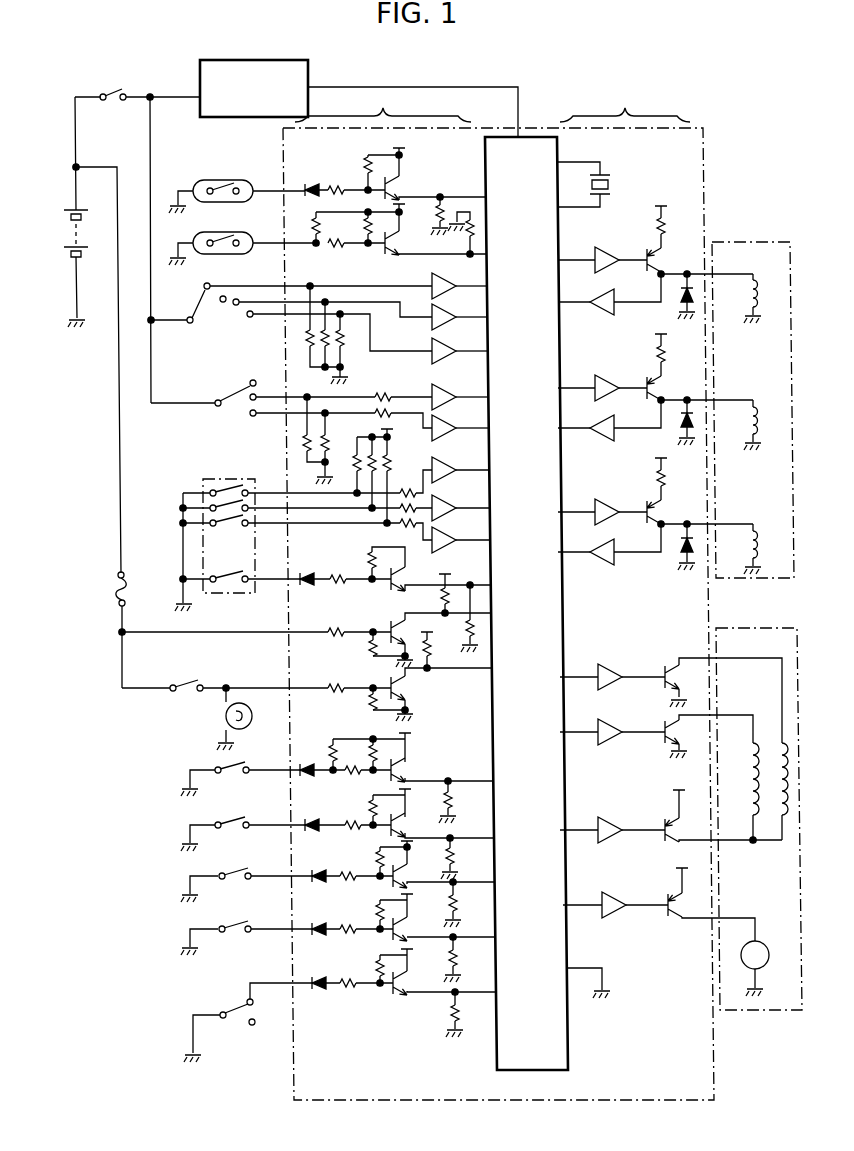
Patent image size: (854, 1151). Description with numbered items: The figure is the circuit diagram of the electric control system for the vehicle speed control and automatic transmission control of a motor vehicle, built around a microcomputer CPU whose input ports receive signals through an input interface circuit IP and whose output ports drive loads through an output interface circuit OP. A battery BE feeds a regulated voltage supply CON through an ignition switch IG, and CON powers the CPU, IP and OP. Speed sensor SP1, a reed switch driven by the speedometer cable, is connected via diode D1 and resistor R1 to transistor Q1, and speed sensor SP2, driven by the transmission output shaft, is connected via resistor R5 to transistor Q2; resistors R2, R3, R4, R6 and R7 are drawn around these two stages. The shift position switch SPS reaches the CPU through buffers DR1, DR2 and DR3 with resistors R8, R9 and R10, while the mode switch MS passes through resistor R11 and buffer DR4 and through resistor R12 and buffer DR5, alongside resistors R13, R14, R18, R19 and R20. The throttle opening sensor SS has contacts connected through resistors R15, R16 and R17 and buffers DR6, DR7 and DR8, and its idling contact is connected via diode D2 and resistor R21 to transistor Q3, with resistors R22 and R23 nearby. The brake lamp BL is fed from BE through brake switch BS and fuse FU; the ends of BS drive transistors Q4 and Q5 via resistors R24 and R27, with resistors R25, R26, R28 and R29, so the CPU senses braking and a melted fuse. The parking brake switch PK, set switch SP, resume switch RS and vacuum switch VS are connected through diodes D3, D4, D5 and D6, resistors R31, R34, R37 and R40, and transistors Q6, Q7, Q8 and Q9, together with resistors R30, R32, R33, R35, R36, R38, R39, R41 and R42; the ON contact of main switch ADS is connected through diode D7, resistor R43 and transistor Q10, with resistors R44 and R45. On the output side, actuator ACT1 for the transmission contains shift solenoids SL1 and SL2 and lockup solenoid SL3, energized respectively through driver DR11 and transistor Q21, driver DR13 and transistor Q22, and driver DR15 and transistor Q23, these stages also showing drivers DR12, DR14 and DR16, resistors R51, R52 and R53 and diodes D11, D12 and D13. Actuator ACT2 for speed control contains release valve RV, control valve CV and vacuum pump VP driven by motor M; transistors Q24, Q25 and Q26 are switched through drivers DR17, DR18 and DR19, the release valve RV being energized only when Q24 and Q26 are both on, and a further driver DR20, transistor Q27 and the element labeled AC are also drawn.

The input interface circuit IP is at (383, 109).
The output interface circuit OP is at (625, 105).
The microcomputer CPU is at (547, 603).
The regulated voltage supply CON is at (263, 60).
The ignition switch IG is at (137, 84).
The battery BE is at (65, 233).
The fuse FU is at (109, 589).
The brake switch BS is at (225, 676).
The brake lamp BL is at (247, 719).
The speed sensor SP1 is at (237, 187).
The speed sensor SP2 is at (242, 242).
The shift position switch SPS is at (202, 311).
The mode switch MS is at (208, 401).
The throttle opening sensor SS is at (230, 534).
The parking brake switch PK is at (220, 779).
The set switch SP is at (221, 834).
The resume switch RS is at (223, 885).
The vacuum switch VS is at (223, 938).
The main switch ADS is at (248, 1012).
The actuator for the automatic transmission ACT1 is at (714, 242).
The actuator for vehicle speed control ACT2 is at (718, 628).
The shift solenoid SL1 is at (764, 293).
The shift solenoid SL2 is at (764, 417).
The lockup solenoid SL3 is at (764, 541).
The release valve RV is at (736, 675).
The control valve CV is at (742, 769).
The coil AC is at (757, 791).
The vacuum pump VP is at (737, 909).
The motor M is at (755, 968).
The diode D1 is at (312, 181).
The diode D2 is at (303, 569).
The diode D3 is at (303, 761).
The diode D4 is at (308, 815).
The diode D5 is at (312, 866).
The diode D6 is at (312, 919).
The diode D7 is at (312, 973).
The diode D11 is at (678, 298).
The diode D12 is at (683, 427).
The diode D13 is at (683, 553).
The transistor Q1 is at (435, 188).
The transistor Q2 is at (436, 243).
The transistor Q3 is at (441, 577).
The transistor Q4 is at (441, 640).
The transistor Q5 is at (442, 694).
The transistor Q6 is at (442, 770).
The transistor Q7 is at (442, 825).
The transistor Q8 is at (444, 876).
The transistor Q9 is at (444, 929).
The transistor Q10 is at (445, 983).
The transistor Q21 is at (671, 260).
The transistor Q22 is at (671, 386).
The transistor Q23 is at (671, 511).
The transistor Q24 is at (688, 686).
The transistor Q25 is at (688, 739).
The transistor Q26 is at (688, 816).
The transistor Q27 is at (690, 892).
The buffer DR1 is at (461, 290).
The buffer DR2 is at (461, 325).
The buffer DR3 is at (461, 360).
The buffer DR4 is at (461, 401).
The buffer DR5 is at (461, 435).
The buffer DR6 is at (461, 476).
The buffer DR7 is at (461, 513).
The buffer DR8 is at (461, 546).
The driver DR11 is at (608, 249).
The driver DR12 is at (608, 318).
The driver DR13 is at (608, 379).
The driver DR14 is at (608, 443).
The driver DR15 is at (608, 502).
The driver DR16 is at (608, 565).
The driver DR17 is at (608, 667).
The driver DR18 is at (608, 746).
The driver DR19 is at (608, 820).
The driver DR20 is at (608, 896).
The resistor R1 is at (336, 180).
The resistor R2 is at (365, 162).
The resistor R3 is at (442, 203).
The resistor R4 is at (313, 231).
The resistor R5 is at (338, 248).
The resistor R6 is at (366, 239).
The resistor R7 is at (471, 217).
The resistor R8 is at (308, 338).
The resistor R9 is at (323, 348).
The resistor R10 is at (343, 347).
The resistor R11 is at (379, 392).
The resistor R12 is at (385, 409).
The resistor R13 is at (304, 443).
The resistor R14 is at (323, 456).
The resistor R15 is at (406, 490).
The resistor R16 is at (405, 510).
The resistor R17 is at (406, 526).
The resistor R18 is at (355, 452).
The resistor R19 is at (377, 456).
The resistor R20 is at (389, 473).
The resistor R21 is at (352, 584).
The resistor R22 is at (367, 560).
The resistor R23 is at (468, 635).
The resistor R24 is at (336, 628).
The resistor R25 is at (370, 644).
The resistor R26 is at (443, 602).
The resistor R27 is at (336, 674).
The resistor R28 is at (370, 700).
The resistor R29 is at (442, 650).
The resistor R30 is at (331, 745).
The resistor R31 is at (352, 774).
The resistor R32 is at (378, 750).
The resistor R33 is at (464, 802).
The resistor R34 is at (353, 828).
The resistor R35 is at (372, 800).
The resistor R36 is at (466, 858).
The resistor R37 is at (361, 882).
The resistor R38 is at (364, 861).
The resistor R39 is at (468, 904).
The resistor R40 is at (351, 935).
The resistor R41 is at (367, 914).
The resistor R42 is at (469, 959).
The resistor R43 is at (350, 991).
The resistor R44 is at (381, 978).
The resistor R45 is at (470, 1014).
The resistor R51 is at (676, 227).
The resistor R52 is at (676, 355).
The resistor R53 is at (676, 479).